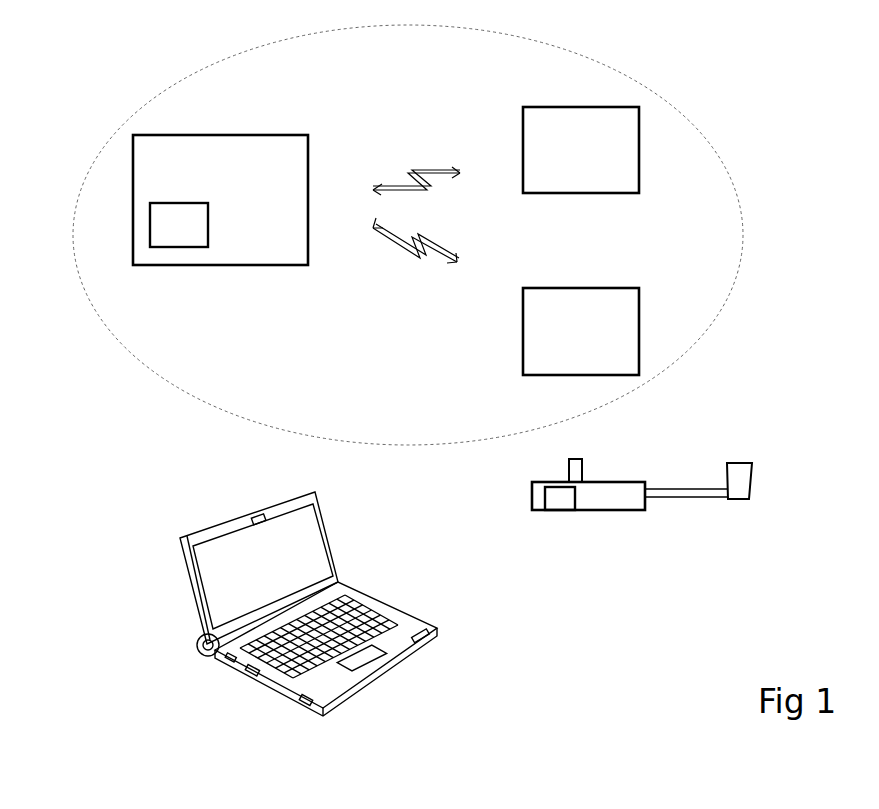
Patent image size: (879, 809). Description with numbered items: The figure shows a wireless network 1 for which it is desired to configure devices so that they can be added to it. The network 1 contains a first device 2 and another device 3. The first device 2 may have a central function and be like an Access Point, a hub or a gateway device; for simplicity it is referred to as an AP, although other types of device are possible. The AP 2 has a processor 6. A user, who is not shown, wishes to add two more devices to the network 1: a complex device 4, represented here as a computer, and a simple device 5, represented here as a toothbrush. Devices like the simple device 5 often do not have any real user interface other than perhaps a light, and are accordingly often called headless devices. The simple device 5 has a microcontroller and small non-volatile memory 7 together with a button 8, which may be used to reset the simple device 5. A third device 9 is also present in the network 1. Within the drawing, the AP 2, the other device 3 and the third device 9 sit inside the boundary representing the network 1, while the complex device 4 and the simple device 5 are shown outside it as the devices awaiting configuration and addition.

The wireless network 1 is at (123, 443).
The first device 2 is at (157, 137).
The another device 3 is at (612, 138).
The complex device 4 is at (273, 658).
The simple device 5 is at (642, 509).
The processor 6 is at (185, 218).
The microcontroller and small non-volatile memory 7 is at (555, 500).
The button 8 is at (583, 472).
The third device 9 is at (597, 313).